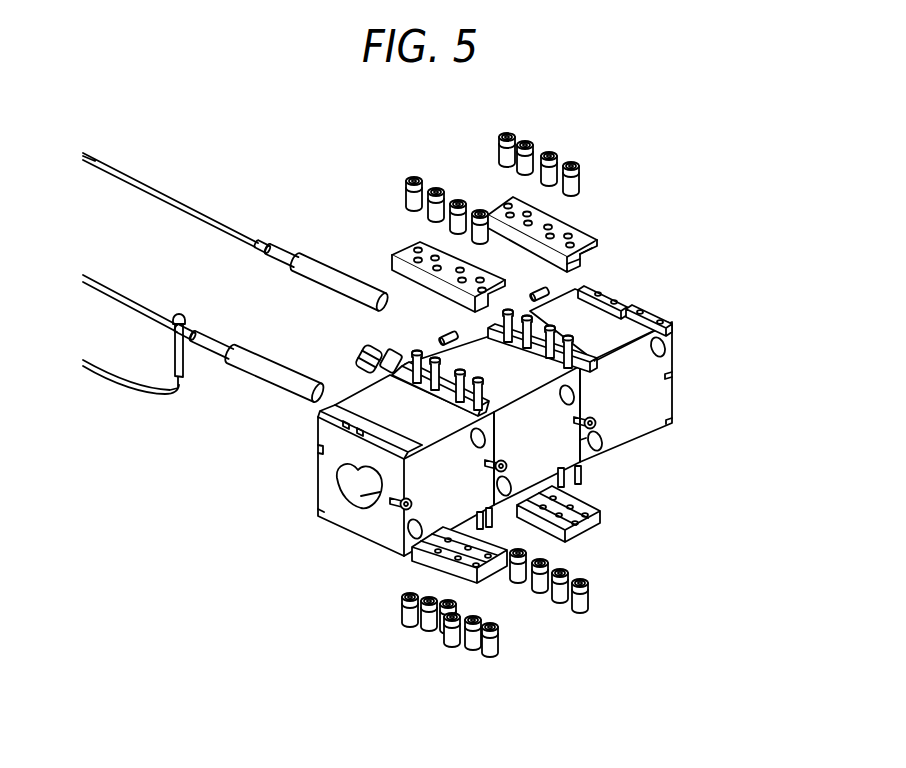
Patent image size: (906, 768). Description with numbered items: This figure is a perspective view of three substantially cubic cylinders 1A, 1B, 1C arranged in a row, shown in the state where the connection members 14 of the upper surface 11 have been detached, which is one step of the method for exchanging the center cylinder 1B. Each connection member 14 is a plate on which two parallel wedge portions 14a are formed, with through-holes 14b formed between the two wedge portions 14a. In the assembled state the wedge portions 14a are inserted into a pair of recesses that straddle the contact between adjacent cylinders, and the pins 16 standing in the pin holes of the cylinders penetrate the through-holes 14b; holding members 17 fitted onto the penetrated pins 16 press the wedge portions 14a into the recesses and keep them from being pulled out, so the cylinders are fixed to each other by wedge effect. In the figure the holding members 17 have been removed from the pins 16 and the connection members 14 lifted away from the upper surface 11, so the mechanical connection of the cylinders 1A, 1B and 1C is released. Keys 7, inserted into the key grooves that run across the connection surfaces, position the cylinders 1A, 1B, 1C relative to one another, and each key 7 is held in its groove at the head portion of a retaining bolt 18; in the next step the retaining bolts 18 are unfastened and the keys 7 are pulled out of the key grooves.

The cylinder 1A is at (368, 521).
The cylinder 1B is at (548, 460).
The cylinder 1C is at (662, 409).
The key 7 is at (540, 291).
The upper surface 11 is at (615, 318).
The connection member 14 is at (594, 237).
The wedge portion 14a is at (580, 256).
The through-hole 14b is at (582, 233).
The pin 16 is at (595, 361).
The holding member 17 is at (574, 154).
The retaining bolt 18 is at (597, 424).